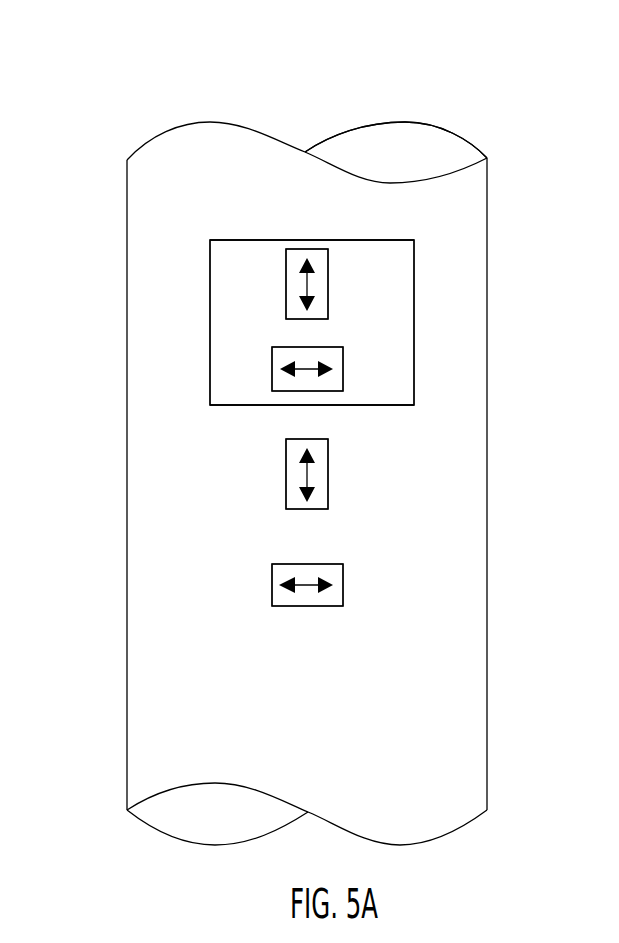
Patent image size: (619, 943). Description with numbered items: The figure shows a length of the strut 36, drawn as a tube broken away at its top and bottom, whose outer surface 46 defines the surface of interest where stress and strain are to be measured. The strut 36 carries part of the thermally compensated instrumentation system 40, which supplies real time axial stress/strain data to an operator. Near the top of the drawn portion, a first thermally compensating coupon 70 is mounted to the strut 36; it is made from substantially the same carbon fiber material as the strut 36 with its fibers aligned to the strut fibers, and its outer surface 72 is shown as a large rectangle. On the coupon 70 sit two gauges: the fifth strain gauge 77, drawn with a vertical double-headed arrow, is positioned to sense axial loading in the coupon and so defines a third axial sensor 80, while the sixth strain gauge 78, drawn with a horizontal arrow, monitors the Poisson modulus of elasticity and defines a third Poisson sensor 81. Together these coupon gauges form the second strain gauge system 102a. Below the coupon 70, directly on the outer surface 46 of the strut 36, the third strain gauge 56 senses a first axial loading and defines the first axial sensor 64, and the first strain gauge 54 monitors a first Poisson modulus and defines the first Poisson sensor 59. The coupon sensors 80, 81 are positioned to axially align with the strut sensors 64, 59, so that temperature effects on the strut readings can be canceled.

The strut 36 is at (78, 205).
The outer surface 46 is at (433, 190).
The second strain gauge system 102a is at (312, 222).
The outer surface 72 is at (255, 287).
The first thermally compensating coupon 70 is at (370, 255).
The third axial sensor 80 is at (290, 270).
The fifth strain gauge 77 is at (330, 297).
The third Poisson sensor 81 is at (283, 355).
The sixth strain gauge 78 is at (343, 357).
The thermally compensated instrumentation system 40 is at (396, 420).
The first axial sensor 64 is at (297, 453).
The third strain gauge 56 is at (330, 492).
The first Poisson sensor 59 is at (277, 572).
The first strain gauge 54 is at (340, 585).